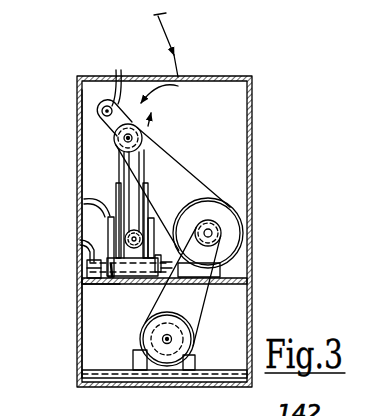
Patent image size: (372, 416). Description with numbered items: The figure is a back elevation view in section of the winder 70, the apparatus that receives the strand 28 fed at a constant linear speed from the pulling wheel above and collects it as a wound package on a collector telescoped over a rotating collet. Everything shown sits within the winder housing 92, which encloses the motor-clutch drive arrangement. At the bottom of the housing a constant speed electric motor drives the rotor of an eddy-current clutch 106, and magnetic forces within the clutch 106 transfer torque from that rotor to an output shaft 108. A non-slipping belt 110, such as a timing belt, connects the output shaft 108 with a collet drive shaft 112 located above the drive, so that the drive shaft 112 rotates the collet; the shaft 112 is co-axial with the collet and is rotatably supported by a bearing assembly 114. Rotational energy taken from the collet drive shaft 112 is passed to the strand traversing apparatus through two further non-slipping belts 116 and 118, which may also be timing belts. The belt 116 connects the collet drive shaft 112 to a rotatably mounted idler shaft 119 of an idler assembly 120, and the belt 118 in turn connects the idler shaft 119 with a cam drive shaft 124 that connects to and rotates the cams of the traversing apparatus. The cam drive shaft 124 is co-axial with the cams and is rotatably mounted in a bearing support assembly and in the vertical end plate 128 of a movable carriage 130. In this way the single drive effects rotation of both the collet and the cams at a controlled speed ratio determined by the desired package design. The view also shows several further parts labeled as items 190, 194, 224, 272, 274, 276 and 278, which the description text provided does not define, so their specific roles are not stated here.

The strand 28 is at (158, 28).
The winder 70 is at (250, 76).
The winder housing 92 is at (94, 270).
The eddy-current clutch 106 is at (195, 325).
The output shaft 108 is at (171, 339).
The non-slipping belt 110 is at (205, 296).
The collet drive shaft 112 is at (212, 233).
The bearing assembly 114 is at (222, 203).
The non-slipping belt 116 is at (162, 155).
The non-slipping belt 118 is at (108, 152).
The idler shaft 119 is at (140, 132).
The idler assembly 120 is at (172, 98).
The cam drive shaft 124 is at (125, 240).
The vertical end plate 128 is at (118, 228).
The movable carriage 130 is at (162, 213).
The shelf support 190 is at (106, 286).
The hook tube 194 is at (84, 244).
The curved tube 224 is at (84, 201).
The posts 272 is at (113, 170).
The arm 274 is at (107, 106).
The side wall 276 is at (80, 97).
The rod 278 is at (118, 72).